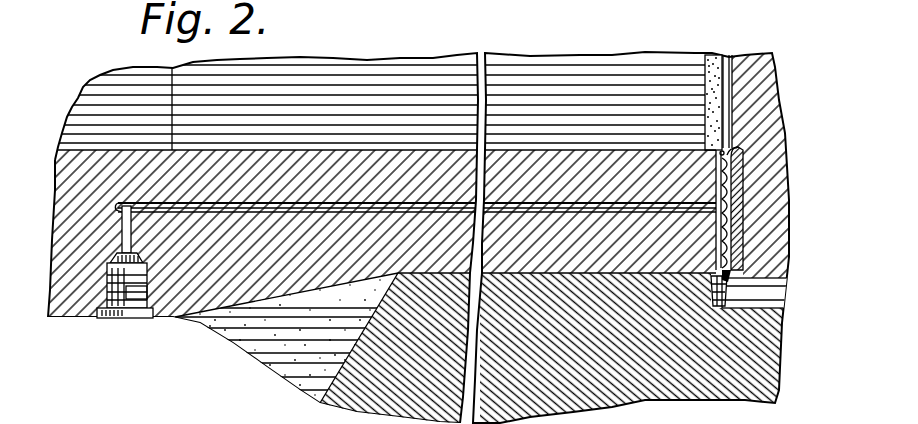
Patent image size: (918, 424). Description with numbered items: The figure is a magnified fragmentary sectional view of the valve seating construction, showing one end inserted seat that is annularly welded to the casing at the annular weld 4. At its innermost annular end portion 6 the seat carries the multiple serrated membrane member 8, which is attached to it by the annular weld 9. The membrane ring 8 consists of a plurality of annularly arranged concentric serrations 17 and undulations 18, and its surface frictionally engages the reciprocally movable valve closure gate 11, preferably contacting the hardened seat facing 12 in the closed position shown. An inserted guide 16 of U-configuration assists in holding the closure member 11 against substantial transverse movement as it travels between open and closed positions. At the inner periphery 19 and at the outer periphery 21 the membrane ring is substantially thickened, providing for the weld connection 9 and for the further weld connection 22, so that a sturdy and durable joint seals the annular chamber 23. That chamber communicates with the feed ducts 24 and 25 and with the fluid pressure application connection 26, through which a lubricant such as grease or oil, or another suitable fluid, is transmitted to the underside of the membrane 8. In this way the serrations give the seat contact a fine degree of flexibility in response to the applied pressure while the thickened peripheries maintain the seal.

The annular weld 4 is at (253, 357).
The innermost annular end portion 6 is at (709, 150).
The multiple serrated membrane member 8 is at (721, 152).
The annular weld 9 is at (722, 155).
The valve closure gate 11 is at (744, 52).
The hardened seat facing 12 is at (757, 293).
The inserted guide 16 is at (432, 16).
The serrations 17 is at (716, 178).
The undulations 18 is at (743, 234).
The inner periphery 19 is at (733, 138).
The outer periphery 21 is at (726, 300).
The weld connection 22 is at (712, 288).
The annular chamber 23 is at (716, 200).
The feed duct 24 is at (292, 203).
The feed duct 25 is at (122, 227).
The fluid pressure application connection 26 is at (132, 318).